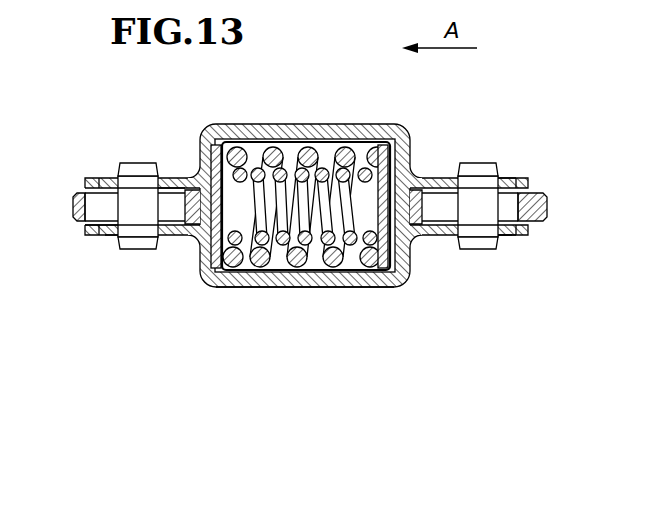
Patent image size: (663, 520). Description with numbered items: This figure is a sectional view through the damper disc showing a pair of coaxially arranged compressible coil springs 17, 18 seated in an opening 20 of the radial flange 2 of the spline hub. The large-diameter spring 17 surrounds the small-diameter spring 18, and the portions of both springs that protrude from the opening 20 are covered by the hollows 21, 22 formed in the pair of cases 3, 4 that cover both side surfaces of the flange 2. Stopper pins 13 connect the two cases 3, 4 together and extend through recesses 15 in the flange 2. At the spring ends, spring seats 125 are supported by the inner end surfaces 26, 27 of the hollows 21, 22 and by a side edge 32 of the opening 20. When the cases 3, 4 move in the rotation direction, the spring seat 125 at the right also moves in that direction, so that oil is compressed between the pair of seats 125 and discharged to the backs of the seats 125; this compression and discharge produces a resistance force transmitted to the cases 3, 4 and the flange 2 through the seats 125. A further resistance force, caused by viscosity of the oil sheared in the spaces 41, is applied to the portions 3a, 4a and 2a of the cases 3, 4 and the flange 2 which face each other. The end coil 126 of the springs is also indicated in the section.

The radial flange 2 is at (66, 207).
The portion of the flange 2a is at (98, 196).
The case 3 is at (78, 230).
The portion of the case 3a is at (106, 242).
The case 4 is at (78, 181).
The portion of the case 4a is at (112, 176).
The stopper pin 13 is at (145, 250).
The recess 15 is at (172, 216).
The compressible coil spring 17 is at (306, 157).
The compressible coil spring 18 is at (330, 135).
The opening 20 is at (195, 246).
The hollow 21 is at (313, 274).
The hollow 22 is at (290, 140).
The inner end surface 26 is at (215, 273).
The inner end surface 27 is at (205, 152).
The side edge 32 is at (408, 174).
The space 41 is at (172, 188).
The spring seat 125 is at (227, 150).
The lower spring end coil 126 is at (236, 272).